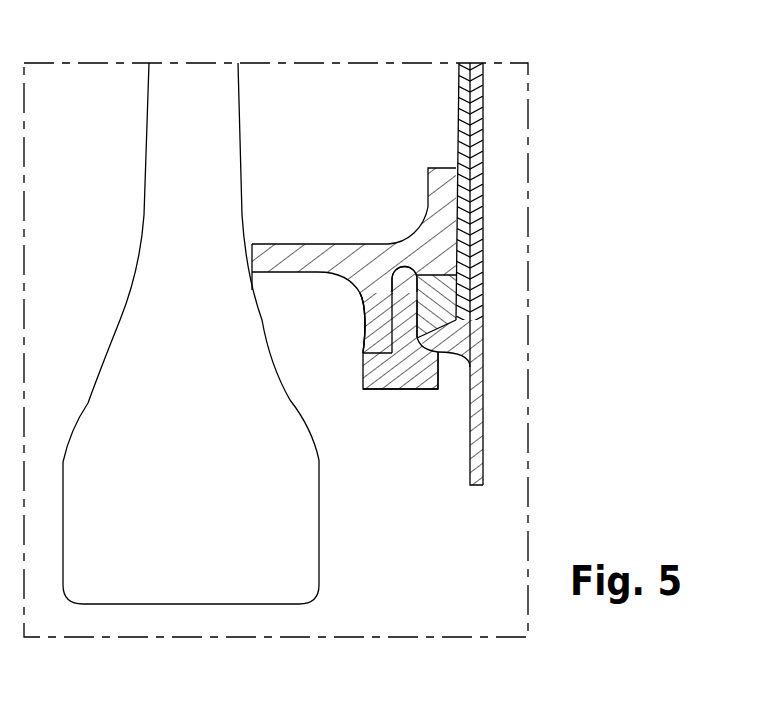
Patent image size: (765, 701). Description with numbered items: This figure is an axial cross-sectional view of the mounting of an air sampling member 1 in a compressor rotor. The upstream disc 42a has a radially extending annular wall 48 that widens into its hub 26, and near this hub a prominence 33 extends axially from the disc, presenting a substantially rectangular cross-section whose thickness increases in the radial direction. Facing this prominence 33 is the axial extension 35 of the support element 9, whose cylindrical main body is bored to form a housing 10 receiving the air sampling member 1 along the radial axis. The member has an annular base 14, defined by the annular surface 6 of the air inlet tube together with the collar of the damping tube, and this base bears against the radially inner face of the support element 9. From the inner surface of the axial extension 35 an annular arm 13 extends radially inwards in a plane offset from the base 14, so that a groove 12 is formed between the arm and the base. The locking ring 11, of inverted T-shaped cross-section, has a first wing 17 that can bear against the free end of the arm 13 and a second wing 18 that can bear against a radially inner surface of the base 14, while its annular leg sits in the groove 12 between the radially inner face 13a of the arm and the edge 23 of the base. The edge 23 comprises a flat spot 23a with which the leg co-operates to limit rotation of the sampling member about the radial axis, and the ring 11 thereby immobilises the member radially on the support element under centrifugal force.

The air sampling member 1 is at (498, 135).
The annular surface 6 is at (455, 290).
The support element 9 is at (437, 188).
The cylindrical housing 10 is at (460, 212).
The locking ring 11 is at (410, 389).
The groove 12 is at (397, 262).
The annular arm 13 is at (378, 321).
The radially inner face of the arm 13a is at (398, 330).
The annular base 14 is at (484, 342).
The first wing 17 is at (372, 372).
The second wing 18 is at (448, 382).
The edge 23 is at (400, 312).
The flat spot 23a is at (408, 318).
The hub 26 is at (280, 532).
The prominence 33 is at (250, 241).
The axial extension 35 is at (284, 250).
The upstream disc 42a is at (133, 118).
The annular wall 48 is at (207, 123).